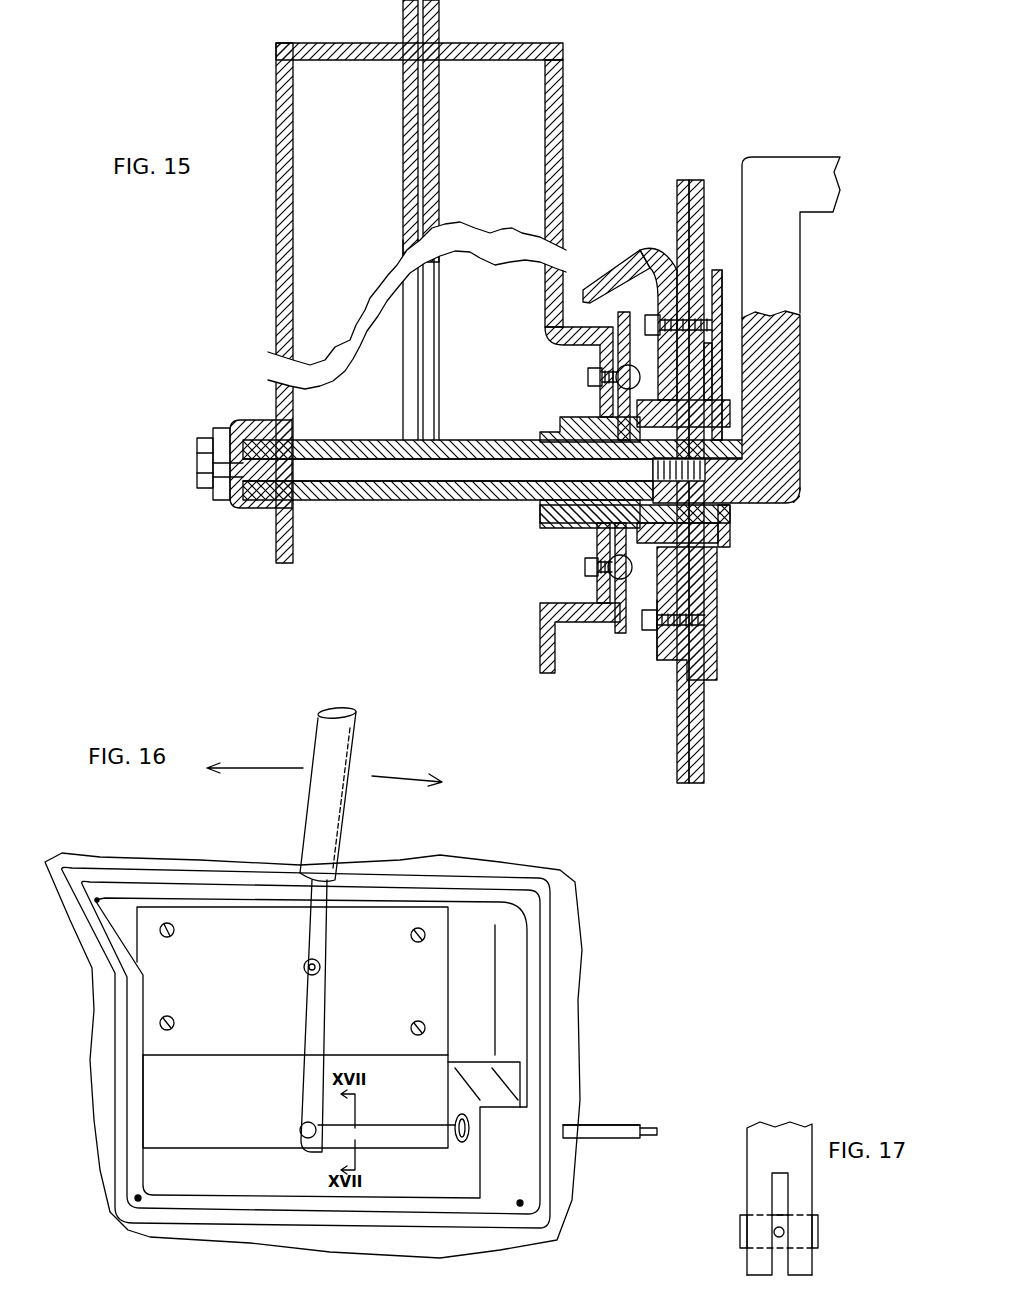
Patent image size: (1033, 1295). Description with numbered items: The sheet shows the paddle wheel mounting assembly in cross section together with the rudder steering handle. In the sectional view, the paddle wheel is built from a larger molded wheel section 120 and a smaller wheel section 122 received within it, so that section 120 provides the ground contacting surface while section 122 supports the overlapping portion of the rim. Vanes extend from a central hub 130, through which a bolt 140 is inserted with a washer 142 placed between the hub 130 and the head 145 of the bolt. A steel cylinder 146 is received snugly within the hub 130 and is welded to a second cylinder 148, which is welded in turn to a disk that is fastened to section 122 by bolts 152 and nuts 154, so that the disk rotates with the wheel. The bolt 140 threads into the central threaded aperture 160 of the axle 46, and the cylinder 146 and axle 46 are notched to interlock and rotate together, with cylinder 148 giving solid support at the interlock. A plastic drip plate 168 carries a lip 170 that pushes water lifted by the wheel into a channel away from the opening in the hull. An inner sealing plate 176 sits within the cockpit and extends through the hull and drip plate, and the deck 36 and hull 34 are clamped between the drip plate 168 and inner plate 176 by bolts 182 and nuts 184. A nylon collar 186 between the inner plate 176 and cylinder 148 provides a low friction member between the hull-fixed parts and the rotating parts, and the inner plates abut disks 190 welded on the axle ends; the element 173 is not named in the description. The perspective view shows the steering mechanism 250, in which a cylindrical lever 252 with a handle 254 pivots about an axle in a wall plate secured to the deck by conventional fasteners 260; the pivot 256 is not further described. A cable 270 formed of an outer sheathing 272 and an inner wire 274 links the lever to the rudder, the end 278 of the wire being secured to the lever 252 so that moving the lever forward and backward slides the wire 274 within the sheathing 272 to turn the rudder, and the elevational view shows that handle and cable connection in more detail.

In FIG. 15, the hull 34 is at (697, 712).
In FIG. 15, the deck 36 is at (678, 743).
In FIG. 15, the axle 46 is at (795, 289).
In FIG. 15, the wheel section 120 is at (275, 528).
In FIG. 15, the wheel section 122 is at (507, 58).
In FIG. 15, the central hub 130 is at (232, 508).
In FIG. 15, the bolt 140 is at (197, 440).
In FIG. 15, the washer 142 is at (219, 428).
In FIG. 15, the head of bolt 145 is at (197, 481).
In FIG. 15, the cylinder 146 is at (470, 441).
In FIG. 15, the cylinder 148 is at (540, 430).
In FIG. 15, the bolts 152 is at (660, 362).
In FIG. 15, the nuts 154 is at (588, 372).
In FIG. 15, the central threaded aperture 160 is at (797, 481).
In FIG. 15, the drip plate 168 is at (660, 250).
In FIG. 15, the lip 170 is at (607, 276).
In FIG. 15, the spacer 173 is at (665, 405).
In FIG. 15, the inner sealing plate 176 is at (728, 266).
In FIG. 15, the bolts 182 is at (715, 620).
In FIG. 15, the nuts 184 is at (652, 642).
In FIG. 15, the nylon collar 186 is at (724, 528).
In FIG. 15, the disks 190 is at (643, 412).
In FIG. 16, the steering mechanism 250 is at (258, 719).
In FIG. 16, the cylindrical lever 252 is at (302, 1012).
In FIG. 16, the handle 254 is at (356, 744).
In FIG. 16, the pivot 256 is at (320, 970).
In FIG. 16, the fasteners 260 is at (175, 931).
In FIG. 16, the cable 270 is at (614, 1118).
In FIG. 16, the sheathing 272 is at (585, 1140).
In FIG. 16, the inner wire 274 is at (405, 1124).
In FIG. 16, the end 278 is at (301, 1138).
In FIG. 17, the end 278 is at (816, 1240).